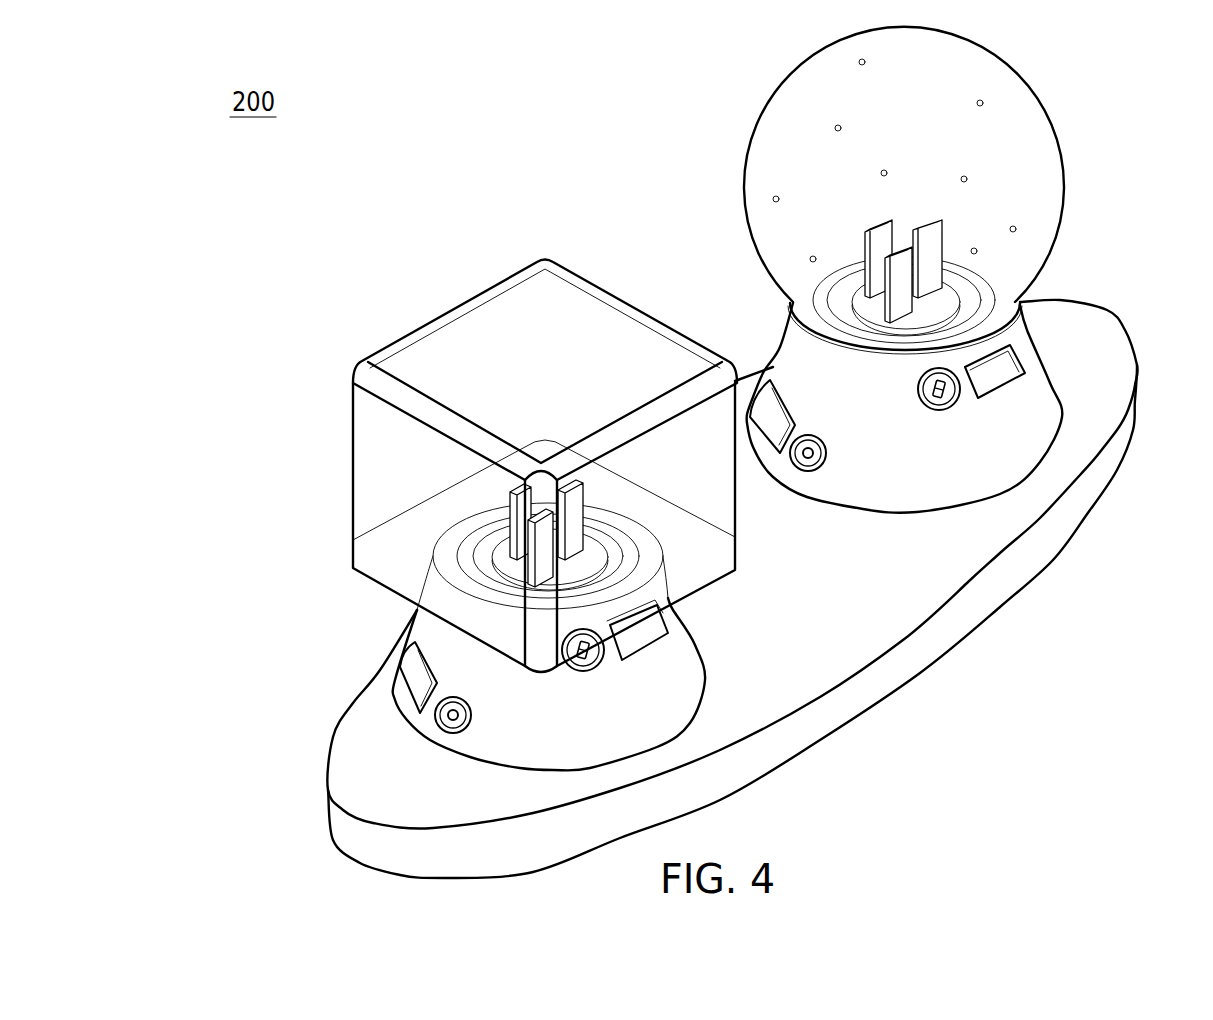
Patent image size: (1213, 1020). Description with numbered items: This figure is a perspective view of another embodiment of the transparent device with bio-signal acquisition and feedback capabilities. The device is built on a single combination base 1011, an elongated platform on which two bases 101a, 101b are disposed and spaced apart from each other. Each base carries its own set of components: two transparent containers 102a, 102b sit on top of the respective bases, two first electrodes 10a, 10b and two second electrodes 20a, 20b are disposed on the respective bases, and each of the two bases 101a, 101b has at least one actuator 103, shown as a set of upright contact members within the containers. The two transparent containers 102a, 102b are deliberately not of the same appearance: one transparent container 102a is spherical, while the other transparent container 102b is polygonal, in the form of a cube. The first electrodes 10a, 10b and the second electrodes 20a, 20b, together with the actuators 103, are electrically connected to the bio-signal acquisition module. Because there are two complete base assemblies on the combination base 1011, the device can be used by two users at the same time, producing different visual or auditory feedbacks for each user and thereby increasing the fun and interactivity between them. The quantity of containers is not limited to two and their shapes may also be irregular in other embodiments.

The combination base 1011 is at (347, 737).
The base 101a is at (1053, 385).
The base 101b is at (407, 615).
The transparent container 102a is at (1063, 157).
The transparent container 102b is at (352, 458).
The actuator 103 is at (490, 530).
The first electrode 10a is at (1010, 367).
The first electrode 10b is at (655, 632).
The second electrode 20a is at (760, 373).
The second electrode 20b is at (407, 677).